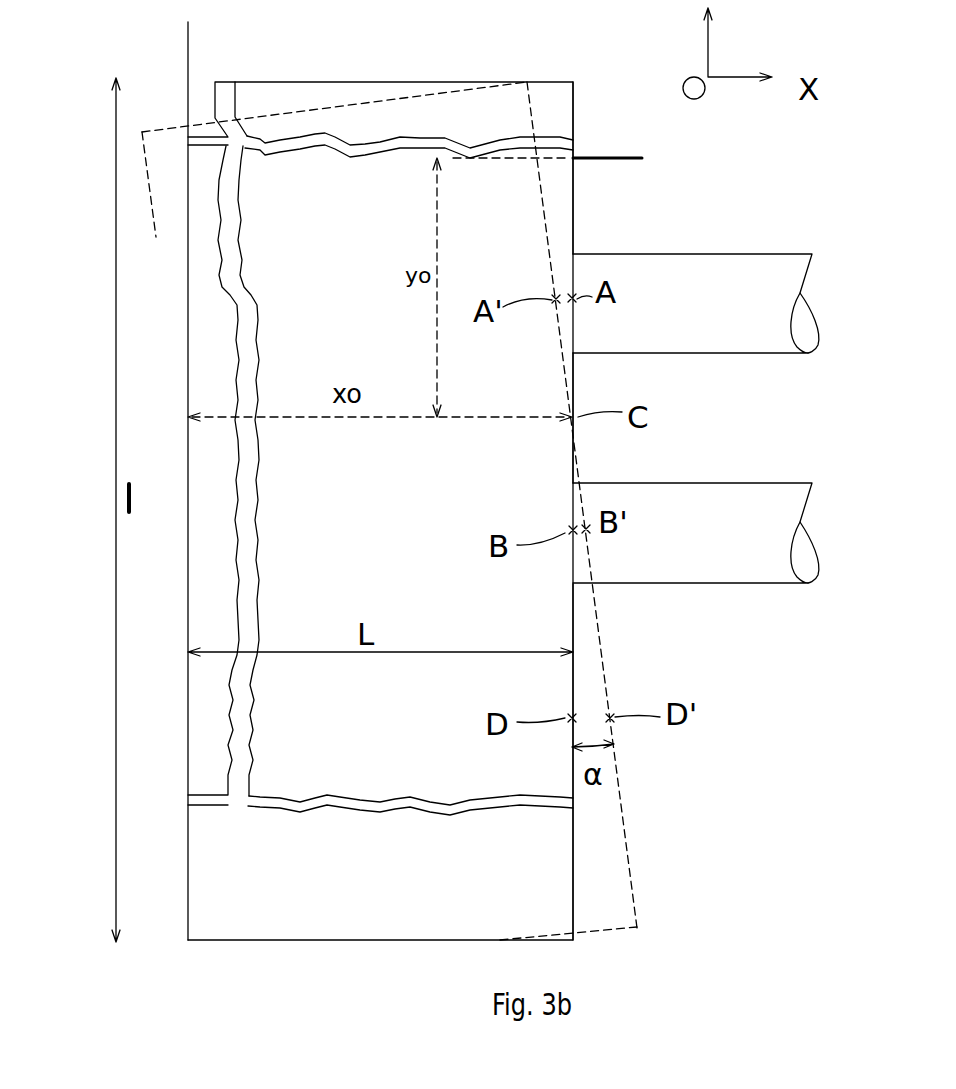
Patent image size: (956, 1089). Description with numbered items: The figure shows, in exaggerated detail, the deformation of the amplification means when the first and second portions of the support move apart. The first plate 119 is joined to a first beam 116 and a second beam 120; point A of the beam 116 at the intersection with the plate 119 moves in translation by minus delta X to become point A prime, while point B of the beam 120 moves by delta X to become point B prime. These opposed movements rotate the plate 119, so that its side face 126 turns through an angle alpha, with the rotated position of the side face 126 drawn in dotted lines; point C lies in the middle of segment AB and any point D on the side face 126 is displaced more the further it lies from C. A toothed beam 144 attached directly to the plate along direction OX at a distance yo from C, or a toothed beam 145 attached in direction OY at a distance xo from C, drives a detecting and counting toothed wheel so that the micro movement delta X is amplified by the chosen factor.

The toothed beam 145 is at (188, 75).
The toothed beam 144 is at (620, 157).
The side face 126 is at (573, 186).
The first beam 116 is at (732, 283).
The second beam 120 is at (693, 515).
The first plate 119 is at (450, 738).